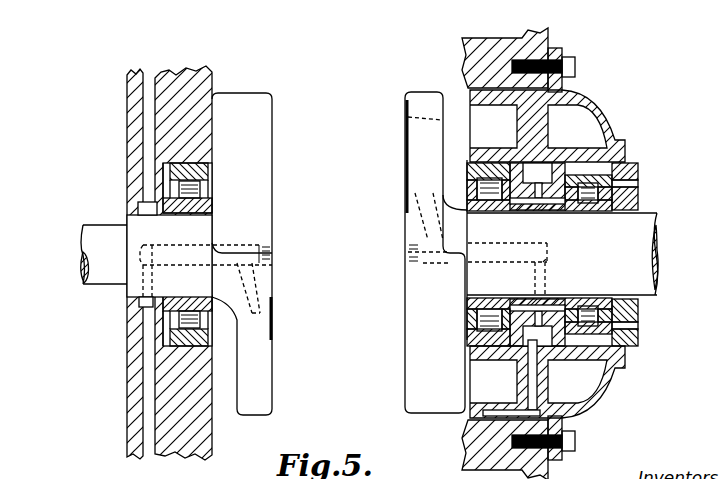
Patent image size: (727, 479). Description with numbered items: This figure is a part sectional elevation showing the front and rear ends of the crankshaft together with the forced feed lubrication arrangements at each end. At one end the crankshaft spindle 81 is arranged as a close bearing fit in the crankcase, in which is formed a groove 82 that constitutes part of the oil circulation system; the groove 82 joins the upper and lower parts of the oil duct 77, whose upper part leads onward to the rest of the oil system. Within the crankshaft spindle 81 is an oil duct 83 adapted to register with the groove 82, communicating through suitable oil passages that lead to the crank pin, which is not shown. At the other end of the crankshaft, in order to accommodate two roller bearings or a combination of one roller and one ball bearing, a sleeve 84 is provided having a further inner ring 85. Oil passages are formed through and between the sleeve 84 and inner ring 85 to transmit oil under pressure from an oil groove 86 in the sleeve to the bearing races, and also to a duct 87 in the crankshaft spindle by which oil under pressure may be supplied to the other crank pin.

The oil duct 77 is at (148, 327).
The crankshaft spindle 81 is at (146, 221).
The groove 82 is at (140, 295).
The oil duct 83 is at (152, 273).
The sleeve 84 is at (521, 172).
The inner ring 85 is at (522, 209).
The oil groove 86 is at (552, 160).
The duct 87 is at (545, 274).